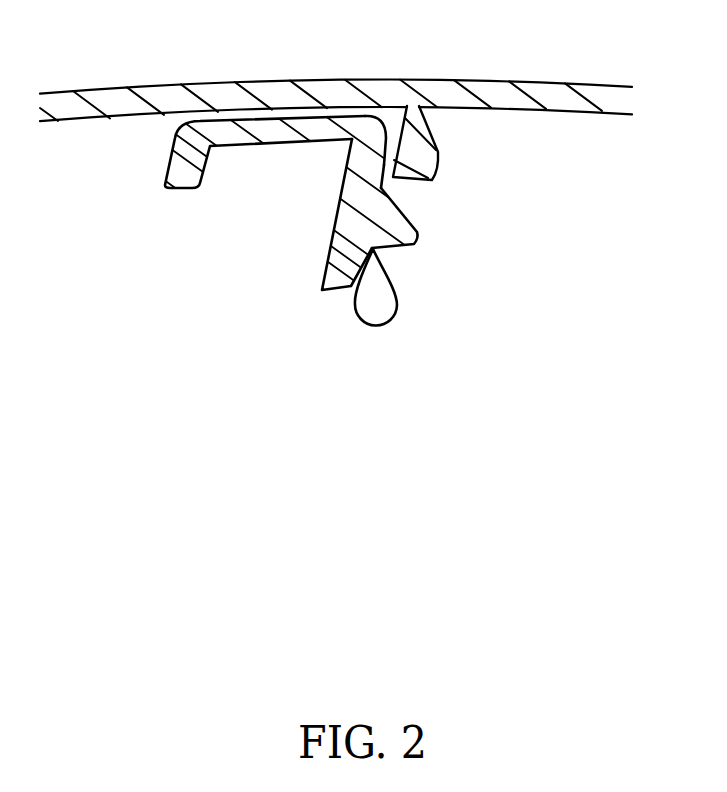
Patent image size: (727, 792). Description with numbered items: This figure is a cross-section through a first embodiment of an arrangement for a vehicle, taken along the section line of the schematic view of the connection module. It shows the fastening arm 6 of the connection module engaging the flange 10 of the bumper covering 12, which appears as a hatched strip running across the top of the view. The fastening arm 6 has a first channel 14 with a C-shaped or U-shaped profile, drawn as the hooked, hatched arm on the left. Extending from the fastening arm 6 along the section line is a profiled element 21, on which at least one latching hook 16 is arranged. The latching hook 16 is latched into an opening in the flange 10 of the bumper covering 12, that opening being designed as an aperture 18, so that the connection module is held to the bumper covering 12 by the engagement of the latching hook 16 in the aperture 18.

The fastening arm 6 is at (142, 222).
The flange 10 is at (456, 164).
The bumper covering 12 is at (602, 73).
The first channel 14 is at (277, 167).
The latching hook 16 is at (350, 228).
The aperture 18 is at (431, 212).
The profiled element 21 is at (362, 158).